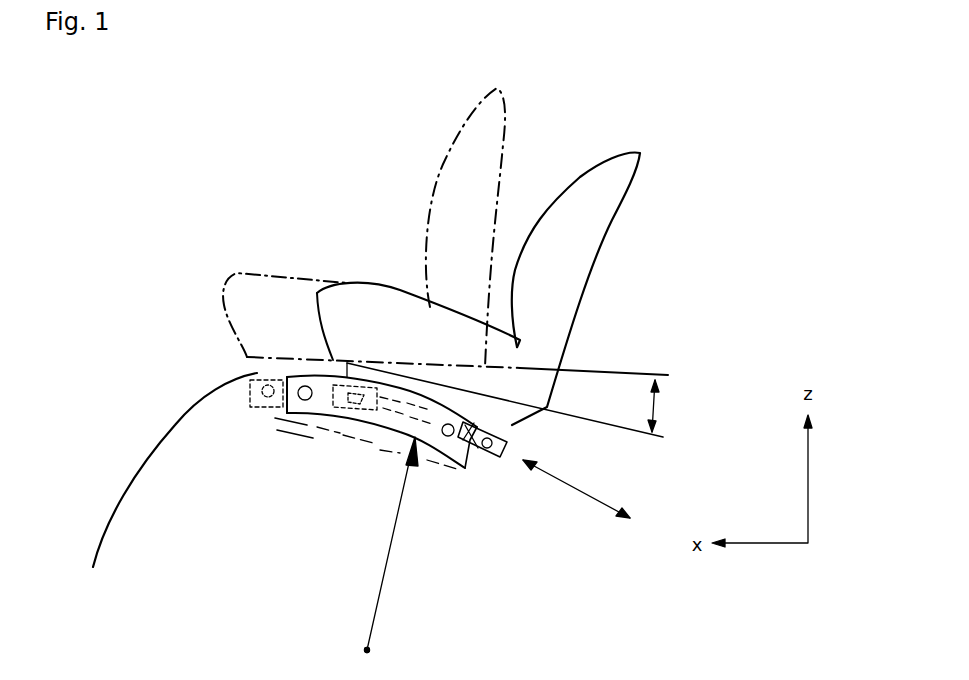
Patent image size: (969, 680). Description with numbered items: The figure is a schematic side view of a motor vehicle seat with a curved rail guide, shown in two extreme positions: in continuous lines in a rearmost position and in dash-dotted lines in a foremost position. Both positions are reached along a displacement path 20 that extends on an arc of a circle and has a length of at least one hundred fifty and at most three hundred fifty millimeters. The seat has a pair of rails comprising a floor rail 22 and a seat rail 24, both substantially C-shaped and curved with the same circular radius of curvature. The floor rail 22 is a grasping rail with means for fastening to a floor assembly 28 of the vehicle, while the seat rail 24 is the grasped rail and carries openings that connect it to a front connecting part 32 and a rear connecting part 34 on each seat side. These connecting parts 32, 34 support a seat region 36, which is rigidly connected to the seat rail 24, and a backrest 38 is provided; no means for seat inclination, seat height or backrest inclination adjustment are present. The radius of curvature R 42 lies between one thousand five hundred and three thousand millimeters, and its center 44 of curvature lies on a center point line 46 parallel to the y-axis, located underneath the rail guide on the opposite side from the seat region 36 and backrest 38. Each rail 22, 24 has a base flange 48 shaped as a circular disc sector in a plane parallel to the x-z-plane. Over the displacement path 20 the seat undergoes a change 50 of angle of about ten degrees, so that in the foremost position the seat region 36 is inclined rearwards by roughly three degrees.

The displacement path 20 is at (588, 503).
The floor rail 22 is at (483, 453).
The seat rail 24 is at (497, 457).
The floor assembly 28 is at (340, 433).
The front connecting part 32 is at (170, 492).
The rear connecting part 34 is at (512, 422).
The seat region 36 is at (333, 303).
The backrest 38 is at (582, 192).
The radius of curvature 42 is at (395, 495).
The center of curvature 44 is at (362, 650).
The center point line 46 is at (372, 649).
The base flange 48 is at (390, 413).
The change of angle 50 is at (657, 402).